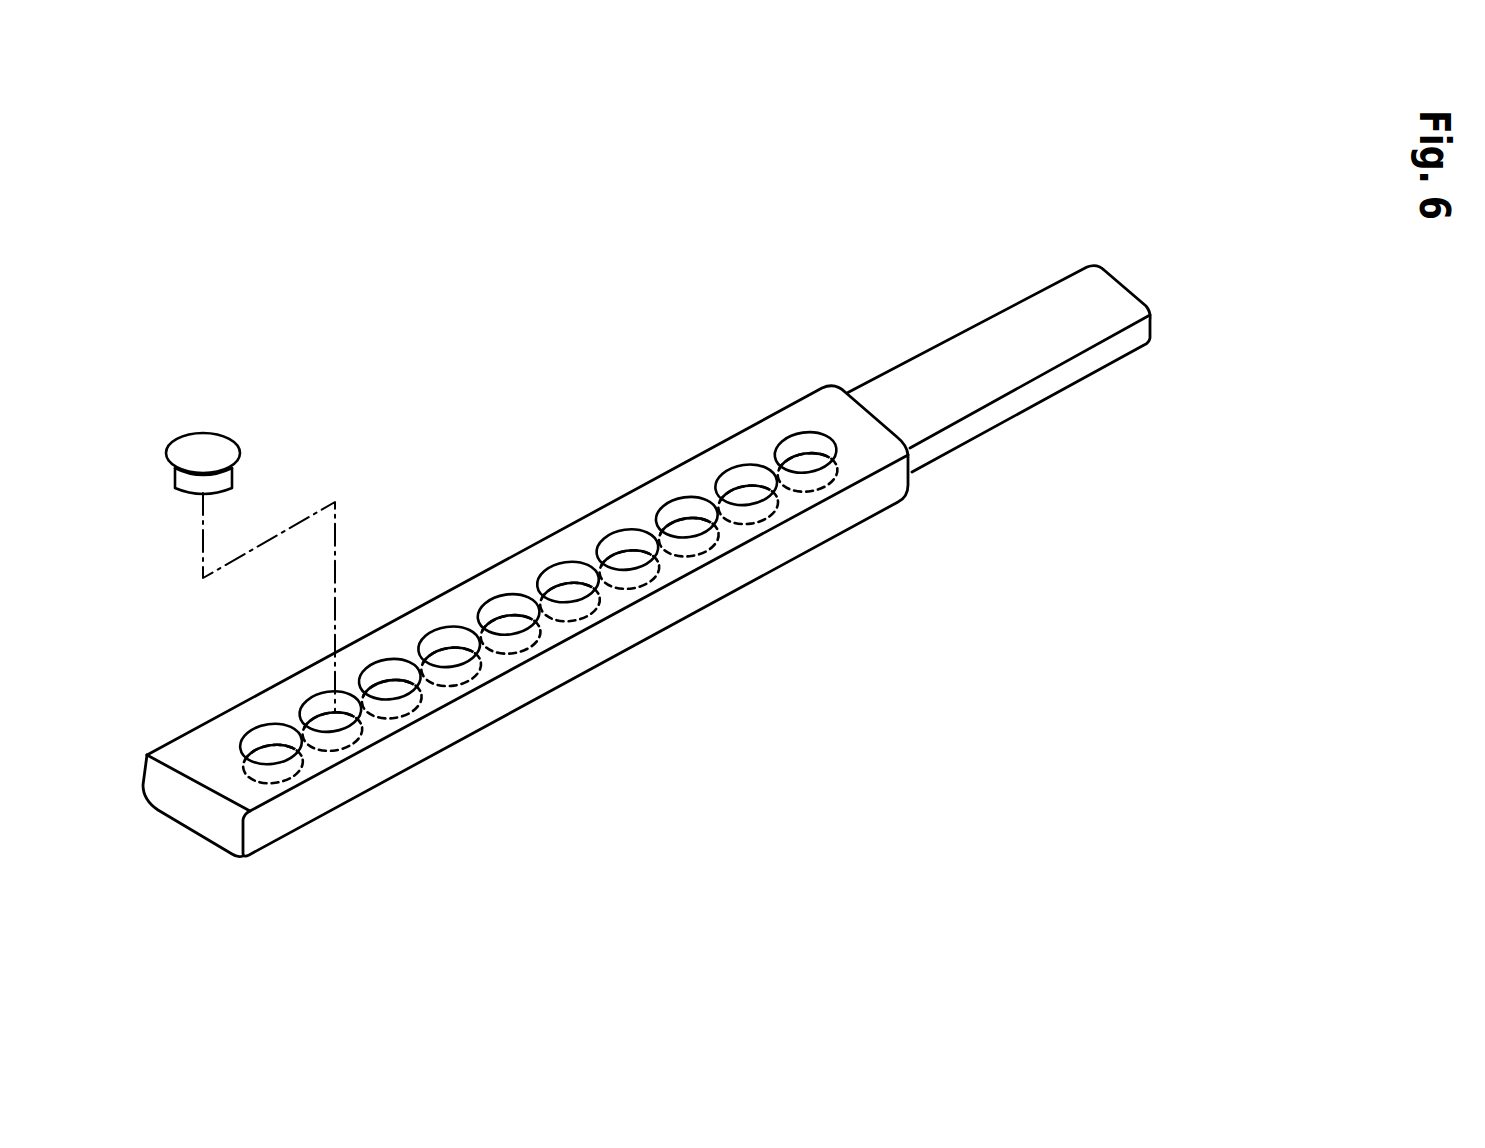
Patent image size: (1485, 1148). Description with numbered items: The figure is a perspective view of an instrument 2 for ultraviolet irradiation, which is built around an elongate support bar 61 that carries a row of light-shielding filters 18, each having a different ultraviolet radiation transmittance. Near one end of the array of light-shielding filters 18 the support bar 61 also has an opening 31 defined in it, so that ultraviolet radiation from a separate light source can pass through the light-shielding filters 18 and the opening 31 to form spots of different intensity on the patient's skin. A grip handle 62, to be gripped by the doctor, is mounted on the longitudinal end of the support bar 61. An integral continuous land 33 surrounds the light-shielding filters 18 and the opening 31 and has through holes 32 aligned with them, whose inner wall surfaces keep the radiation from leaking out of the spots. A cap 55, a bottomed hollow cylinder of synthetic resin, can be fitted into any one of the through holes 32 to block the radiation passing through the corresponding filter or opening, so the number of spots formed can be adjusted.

The instrument for ultraviolet irradiation 2 is at (1010, 887).
The light-shielding filter 18 is at (363, 748).
The opening 31 is at (822, 482).
The through hole 32 is at (505, 598).
The land 33 is at (590, 562).
The cap 55 is at (203, 447).
The support bar 61 is at (700, 584).
The grip handle 62 is at (935, 367).